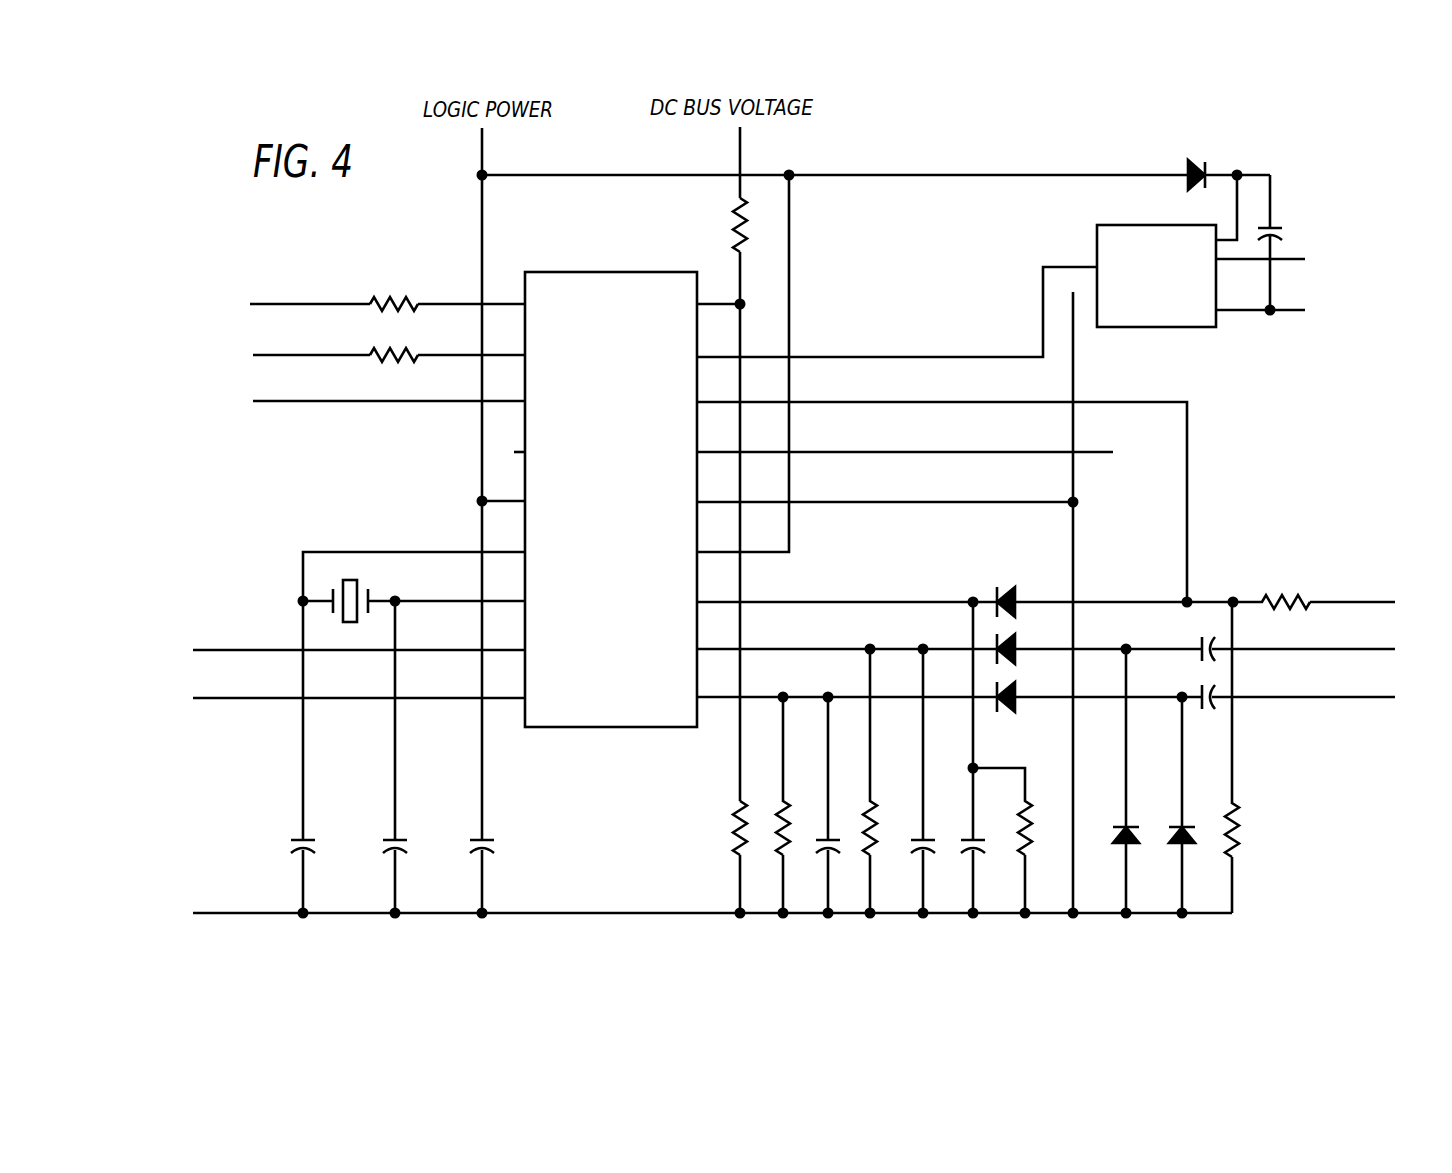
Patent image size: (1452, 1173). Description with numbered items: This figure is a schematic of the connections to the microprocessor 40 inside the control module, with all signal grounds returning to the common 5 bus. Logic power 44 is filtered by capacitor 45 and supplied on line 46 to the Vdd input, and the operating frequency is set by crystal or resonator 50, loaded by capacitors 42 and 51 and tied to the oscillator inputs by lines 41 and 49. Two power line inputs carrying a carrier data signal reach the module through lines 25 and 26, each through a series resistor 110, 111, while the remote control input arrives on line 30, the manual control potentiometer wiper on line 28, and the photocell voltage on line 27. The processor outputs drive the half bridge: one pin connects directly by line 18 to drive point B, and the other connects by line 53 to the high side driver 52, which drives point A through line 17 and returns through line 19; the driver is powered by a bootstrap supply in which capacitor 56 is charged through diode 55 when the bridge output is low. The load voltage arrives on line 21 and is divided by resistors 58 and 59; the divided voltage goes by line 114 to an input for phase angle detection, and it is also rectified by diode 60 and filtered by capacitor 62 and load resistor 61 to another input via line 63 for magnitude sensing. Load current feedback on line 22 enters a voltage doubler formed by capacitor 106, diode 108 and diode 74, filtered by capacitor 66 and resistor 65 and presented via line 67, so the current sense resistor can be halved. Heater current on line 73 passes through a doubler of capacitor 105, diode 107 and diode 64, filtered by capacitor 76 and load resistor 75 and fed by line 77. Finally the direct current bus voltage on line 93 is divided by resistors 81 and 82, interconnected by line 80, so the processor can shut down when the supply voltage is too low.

The common 5 is at (215, 915).
The line 17 is at (1243, 262).
The line 18 is at (813, 452).
The line 19 is at (1243, 315).
The line 21 is at (1322, 600).
The line 22 is at (1322, 699).
The line 25 is at (320, 304).
The line 26 is at (320, 355).
The line 27 is at (275, 700).
The line 28 is at (195, 648).
The remote control line 30 is at (318, 401).
The microprocessor 40 is at (688, 272).
The line 41 is at (412, 550).
The capacitor 42 is at (305, 835).
The logic power 44 is at (483, 148).
The capacitor 45 is at (484, 835).
The line 46 is at (500, 498).
The line 49 is at (405, 606).
The crystal or resonator 50 is at (360, 588).
The capacitor 51 is at (397, 835).
The high side driver 52 is at (1097, 240).
The line 53 is at (812, 357).
The diode 55 is at (1193, 168).
The capacitor 56 is at (1275, 222).
The resistor 58 is at (1272, 592).
The resistor 59 is at (1240, 835).
The diode 60 is at (1003, 586).
The load resistor 61 is at (1028, 805).
The capacitor 62 is at (975, 838).
The line 63 is at (790, 602).
The diode 64 is at (1020, 640).
The resistor 65 is at (780, 805).
The capacitor 66 is at (830, 835).
The line 67 is at (760, 697).
The line 73 is at (1322, 651).
The diode 74 is at (1012, 694).
The load resistor 75 is at (872, 805).
The capacitor 76 is at (925, 838).
The line 77 is at (750, 649).
The line 80 is at (740, 573).
The resistor 81 is at (735, 222).
The resistor 82 is at (735, 812).
The line 93 is at (741, 145).
The capacitor 105 is at (1205, 636).
The capacitor 106 is at (1205, 683).
The diode 107 is at (1135, 800).
The diode 108 is at (1185, 848).
The resistor 110 is at (415, 302).
The resistor 111 is at (413, 355).
The line 114 is at (1147, 402).